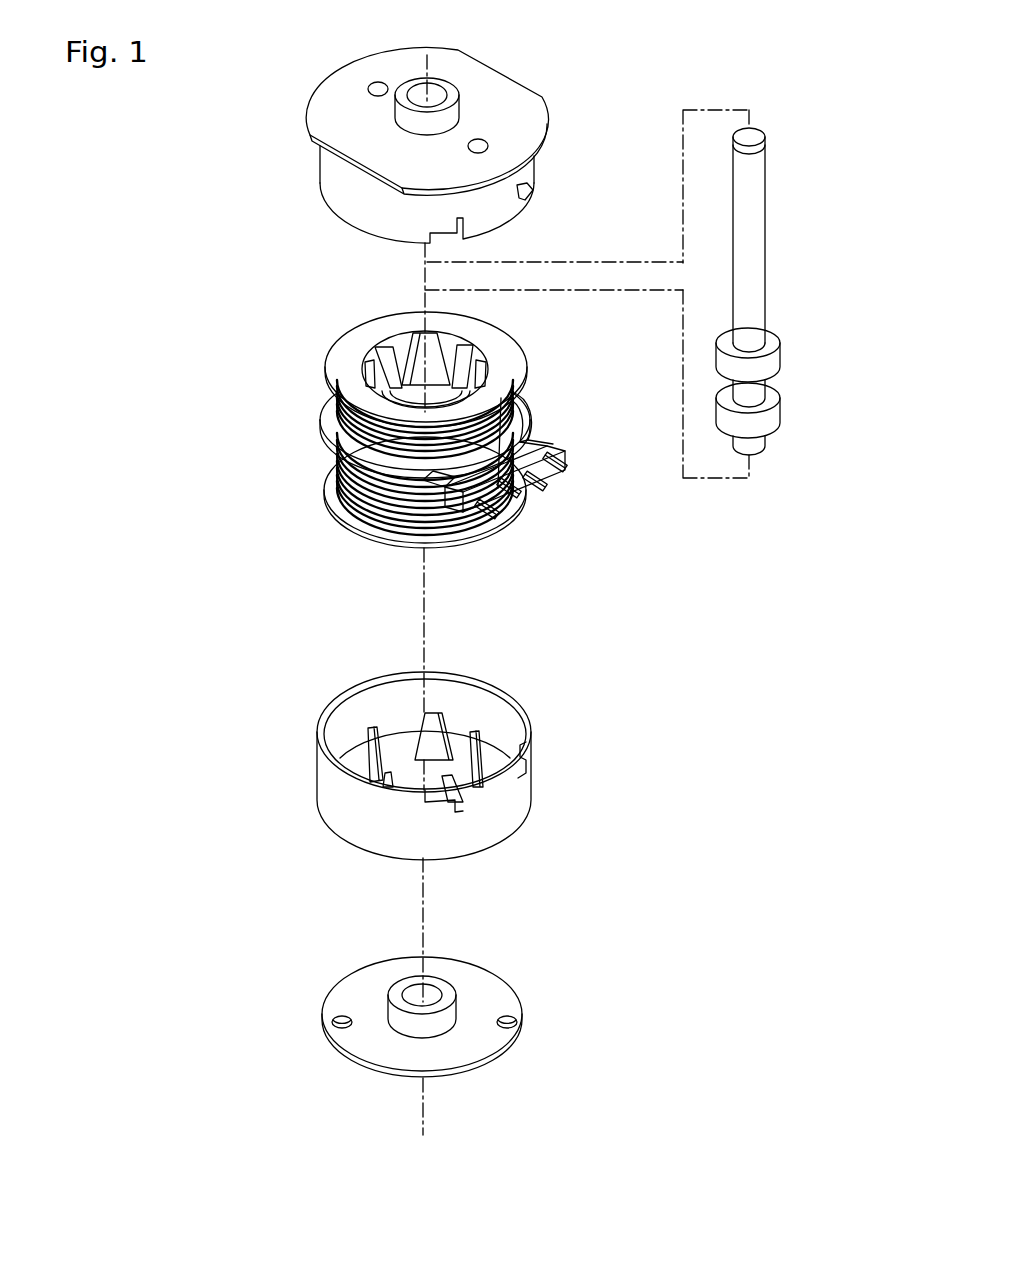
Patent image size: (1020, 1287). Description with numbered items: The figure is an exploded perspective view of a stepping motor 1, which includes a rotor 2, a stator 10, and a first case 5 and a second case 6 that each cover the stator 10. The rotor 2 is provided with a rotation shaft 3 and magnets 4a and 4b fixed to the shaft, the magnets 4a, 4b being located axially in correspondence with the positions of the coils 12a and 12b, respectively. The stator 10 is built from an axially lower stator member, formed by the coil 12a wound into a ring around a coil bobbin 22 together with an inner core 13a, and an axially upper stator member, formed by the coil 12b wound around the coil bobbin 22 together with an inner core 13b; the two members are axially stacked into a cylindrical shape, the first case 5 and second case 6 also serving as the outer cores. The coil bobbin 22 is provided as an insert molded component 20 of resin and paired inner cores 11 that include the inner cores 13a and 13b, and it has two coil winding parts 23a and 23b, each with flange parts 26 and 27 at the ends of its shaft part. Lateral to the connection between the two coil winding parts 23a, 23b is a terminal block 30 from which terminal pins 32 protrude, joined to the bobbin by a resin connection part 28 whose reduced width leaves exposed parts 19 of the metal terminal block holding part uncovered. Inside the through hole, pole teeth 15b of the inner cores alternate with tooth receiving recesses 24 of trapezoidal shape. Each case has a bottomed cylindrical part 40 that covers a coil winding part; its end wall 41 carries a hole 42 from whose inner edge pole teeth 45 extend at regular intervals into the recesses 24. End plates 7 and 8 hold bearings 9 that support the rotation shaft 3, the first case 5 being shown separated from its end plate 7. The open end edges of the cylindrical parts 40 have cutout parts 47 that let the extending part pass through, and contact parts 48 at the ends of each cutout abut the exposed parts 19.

The stepping motor 1 is at (652, 745).
The rotor 2 is at (770, 148).
The rotation shaft 3 is at (753, 245).
The magnet 4a is at (772, 412).
The magnet 4b is at (772, 360).
The first case 5 is at (318, 768).
The second case 6 is at (320, 150).
The end plate 7 is at (483, 1000).
The end plate 8 is at (528, 103).
The bearing 9 is at (452, 90).
The stator 10 is at (148, 325).
The paired inner cores 11 is at (205, 483).
The coil 12a is at (347, 505).
The coil 12b is at (330, 410).
The inner core 13a is at (343, 492).
The inner core 13b is at (330, 471).
The pole teeth 15b is at (412, 335).
The exposed part 19 is at (428, 484).
The insert molded component 20 is at (320, 336).
The coil bobbin 22 is at (325, 365).
The coil winding part 23a is at (320, 470).
The coil winding part 23b is at (540, 386).
The tooth receiving recess 24 is at (393, 352).
The flange part 26 is at (517, 416).
The flange part 27 is at (488, 337).
The resin connection part 28 is at (520, 512).
The terminal block 30 is at (548, 441).
The terminal pins 32 is at (548, 479).
The cylindrical part 40 is at (521, 180).
The end wall 41 is at (461, 747).
The hole 42 is at (393, 742).
The pole teeth 45 is at (432, 728).
The cutout part 47 is at (503, 212).
The contact part 48 is at (449, 233).